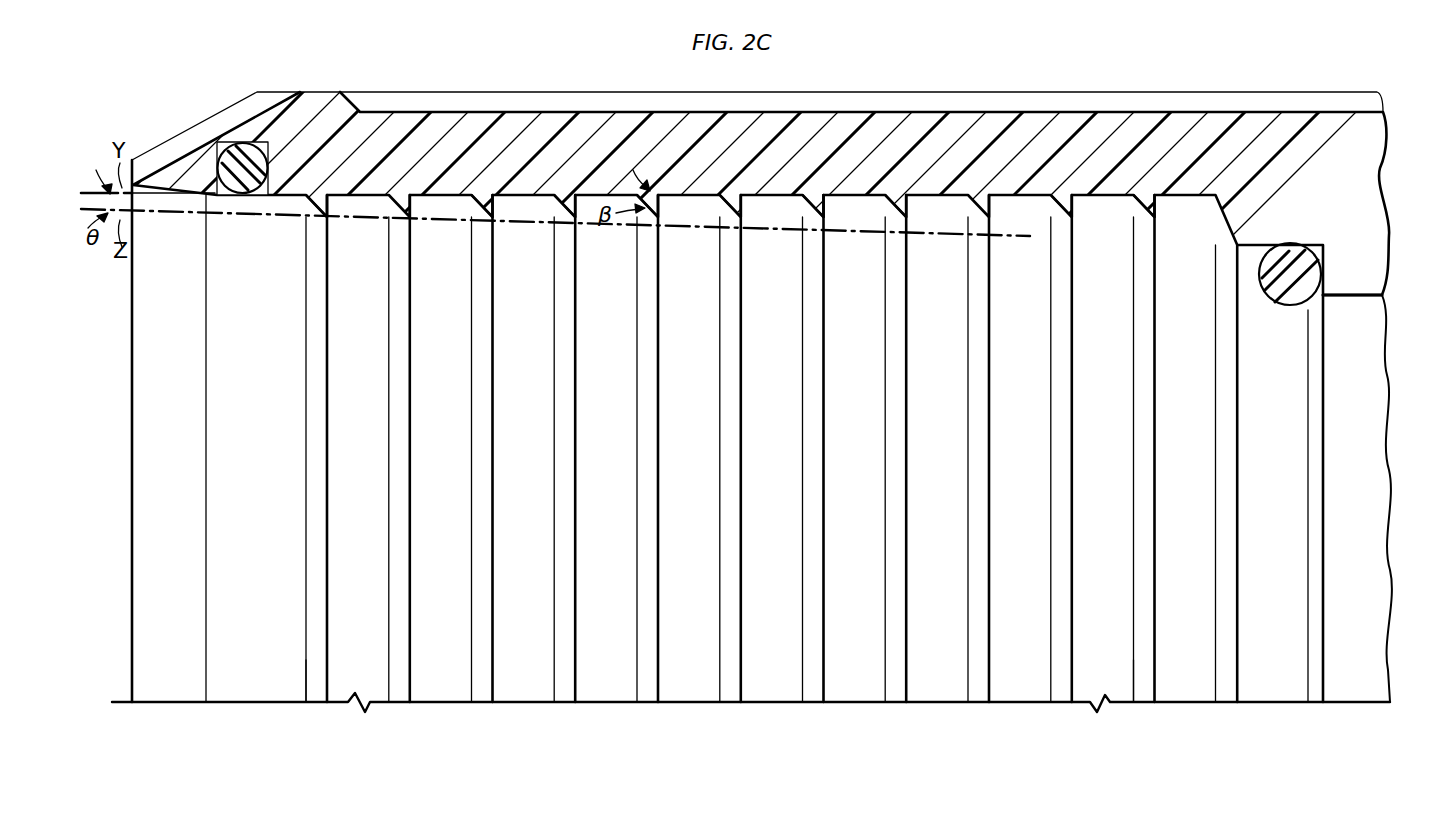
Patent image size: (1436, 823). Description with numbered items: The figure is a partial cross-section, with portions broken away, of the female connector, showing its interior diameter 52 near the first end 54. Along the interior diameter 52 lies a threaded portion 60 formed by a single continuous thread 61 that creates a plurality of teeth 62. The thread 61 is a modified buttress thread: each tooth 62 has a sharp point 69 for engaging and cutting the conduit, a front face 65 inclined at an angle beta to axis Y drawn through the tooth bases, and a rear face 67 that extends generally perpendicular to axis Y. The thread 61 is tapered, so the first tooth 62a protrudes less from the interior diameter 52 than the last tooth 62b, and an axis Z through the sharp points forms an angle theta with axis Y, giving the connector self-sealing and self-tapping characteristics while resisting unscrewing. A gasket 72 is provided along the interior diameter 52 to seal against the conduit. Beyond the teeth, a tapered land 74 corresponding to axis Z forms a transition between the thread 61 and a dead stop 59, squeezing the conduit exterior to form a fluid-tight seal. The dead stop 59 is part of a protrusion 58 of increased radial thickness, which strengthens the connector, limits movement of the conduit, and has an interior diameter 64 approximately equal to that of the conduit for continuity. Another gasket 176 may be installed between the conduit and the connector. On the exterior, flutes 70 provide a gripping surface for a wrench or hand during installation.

The interior diameter 52 is at (1337, 296).
The first end 54 is at (425, 727).
The protrusion 58 is at (1374, 168).
The dead stop 59 is at (1333, 258).
The threaded portion 60 is at (786, 459).
The thread 61 is at (315, 702).
The teeth 62 is at (1068, 224).
The first tooth 62a is at (303, 205).
The last tooth 62b is at (1154, 218).
The interior diameter of protrusion 64 is at (1377, 305).
The front face 65 is at (651, 219).
The rear face 67 is at (668, 212).
The sharp point 69 is at (490, 226).
The flutes 70 is at (405, 104).
The gasket 72 is at (238, 196).
The land 74 is at (1237, 243).
The gasket 176 is at (1292, 306).